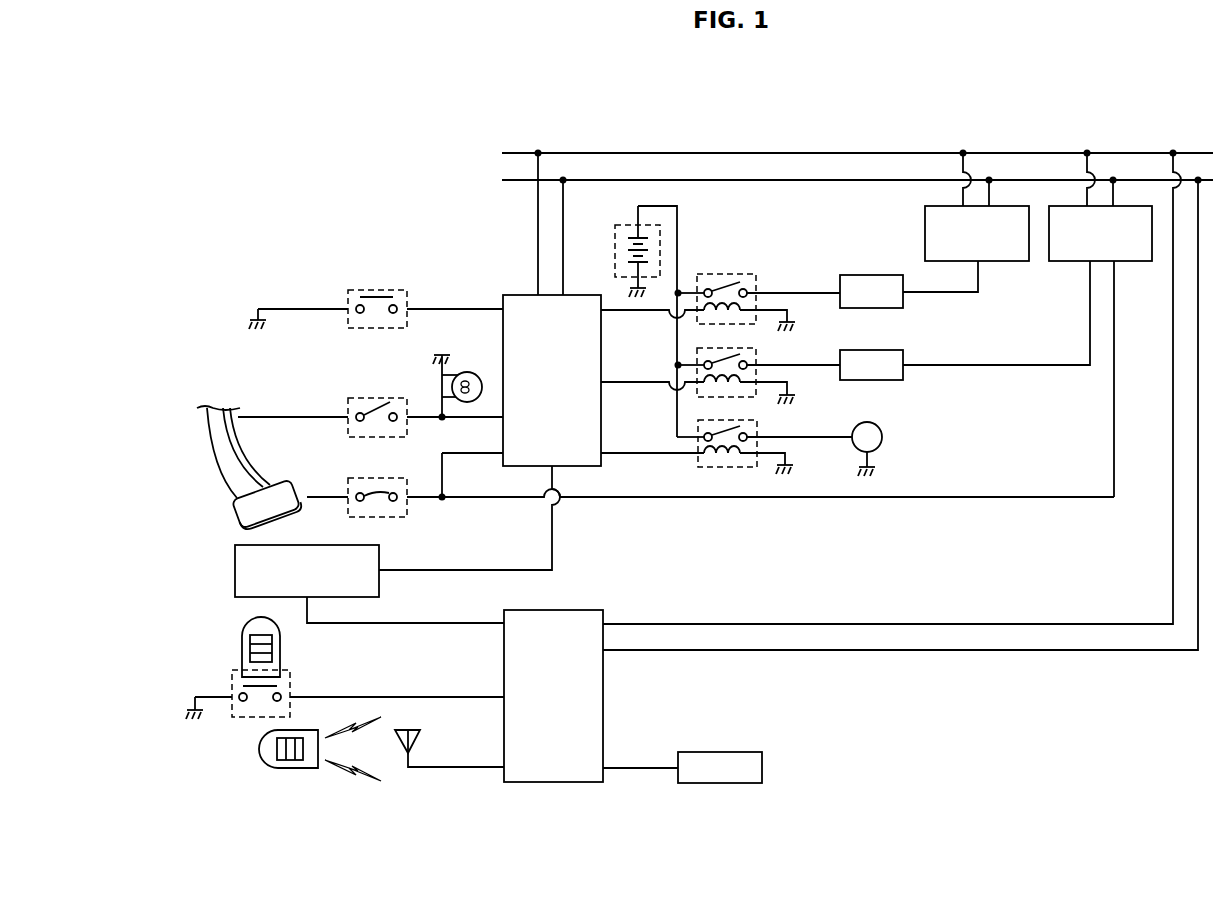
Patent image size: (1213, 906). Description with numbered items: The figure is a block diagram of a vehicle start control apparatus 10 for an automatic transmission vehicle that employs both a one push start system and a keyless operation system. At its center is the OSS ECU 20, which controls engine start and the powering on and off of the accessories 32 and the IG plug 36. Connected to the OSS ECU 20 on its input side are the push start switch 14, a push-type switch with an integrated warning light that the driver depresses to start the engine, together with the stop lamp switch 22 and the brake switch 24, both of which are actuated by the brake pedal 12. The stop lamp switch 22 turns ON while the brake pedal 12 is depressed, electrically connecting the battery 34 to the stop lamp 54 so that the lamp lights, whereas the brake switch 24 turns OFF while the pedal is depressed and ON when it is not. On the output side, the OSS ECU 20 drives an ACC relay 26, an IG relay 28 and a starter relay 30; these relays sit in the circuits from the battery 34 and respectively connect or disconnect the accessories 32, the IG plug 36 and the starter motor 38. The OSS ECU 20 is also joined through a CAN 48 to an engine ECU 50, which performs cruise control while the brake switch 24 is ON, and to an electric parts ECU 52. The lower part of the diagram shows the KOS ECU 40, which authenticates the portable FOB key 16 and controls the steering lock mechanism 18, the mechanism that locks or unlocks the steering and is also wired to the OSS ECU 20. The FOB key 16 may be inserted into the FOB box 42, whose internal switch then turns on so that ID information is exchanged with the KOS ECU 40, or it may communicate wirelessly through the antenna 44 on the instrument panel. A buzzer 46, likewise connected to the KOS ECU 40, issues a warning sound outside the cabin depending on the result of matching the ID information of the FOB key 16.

The vehicle start control apparatus 10 is at (262, 193).
The brake pedal 12 is at (215, 455).
The push start switch 14 is at (372, 288).
The FOB key 16 is at (280, 645).
The steering lock mechanism 18 is at (235, 570).
The OSS ECU 20 is at (517, 295).
The stop lamp switch 22 is at (372, 398).
The brake switch 24 is at (410, 518).
The ACC relay 26 is at (730, 274).
The IG relay 28 is at (758, 350).
The starter relay 30 is at (759, 422).
The accessories (ACC) 32 is at (875, 275).
The battery 34 is at (613, 252).
The IG plug 36 is at (905, 354).
The starter motor 38 is at (882, 437).
The KOS ECU 40 is at (605, 697).
The FOB box 42 is at (228, 680).
The antenna 44 is at (425, 740).
The buzzer 46 is at (765, 768).
The CAN 48 is at (795, 153).
The engine ECU 50 is at (1140, 262).
The electric parts ECU 52 is at (1012, 262).
The stop lamp 54 is at (470, 372).